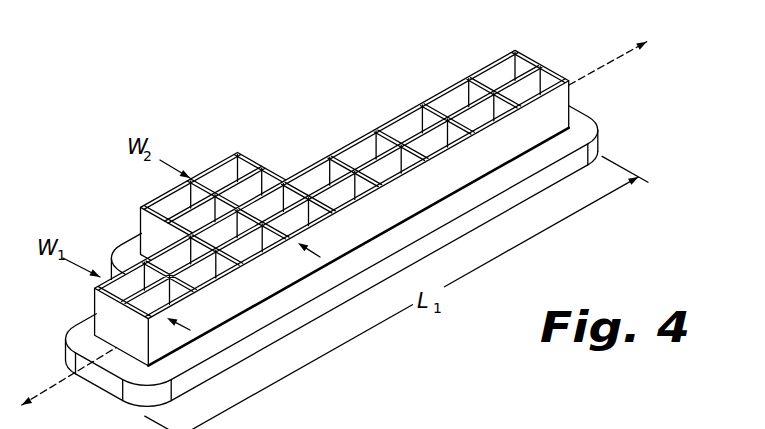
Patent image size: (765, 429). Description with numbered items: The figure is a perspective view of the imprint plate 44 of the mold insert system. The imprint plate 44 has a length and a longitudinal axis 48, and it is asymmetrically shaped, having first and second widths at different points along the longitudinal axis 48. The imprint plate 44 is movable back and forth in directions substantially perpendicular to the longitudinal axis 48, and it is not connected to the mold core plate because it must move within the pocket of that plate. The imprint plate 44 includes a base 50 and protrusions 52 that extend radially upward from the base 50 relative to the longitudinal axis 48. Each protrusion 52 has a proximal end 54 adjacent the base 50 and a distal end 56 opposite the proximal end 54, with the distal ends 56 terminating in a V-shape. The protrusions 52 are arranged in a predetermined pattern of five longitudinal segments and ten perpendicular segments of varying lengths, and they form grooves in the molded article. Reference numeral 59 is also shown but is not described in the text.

The imprint plate 44 is at (369, 194).
The longitudinal axis 48 is at (610, 63).
The base 50 is at (600, 143).
The protrusions 52 is at (407, 108).
The proximal end 54 is at (592, 117).
The distal end 56 is at (548, 91).
The elongated member 59 is at (500, 428).